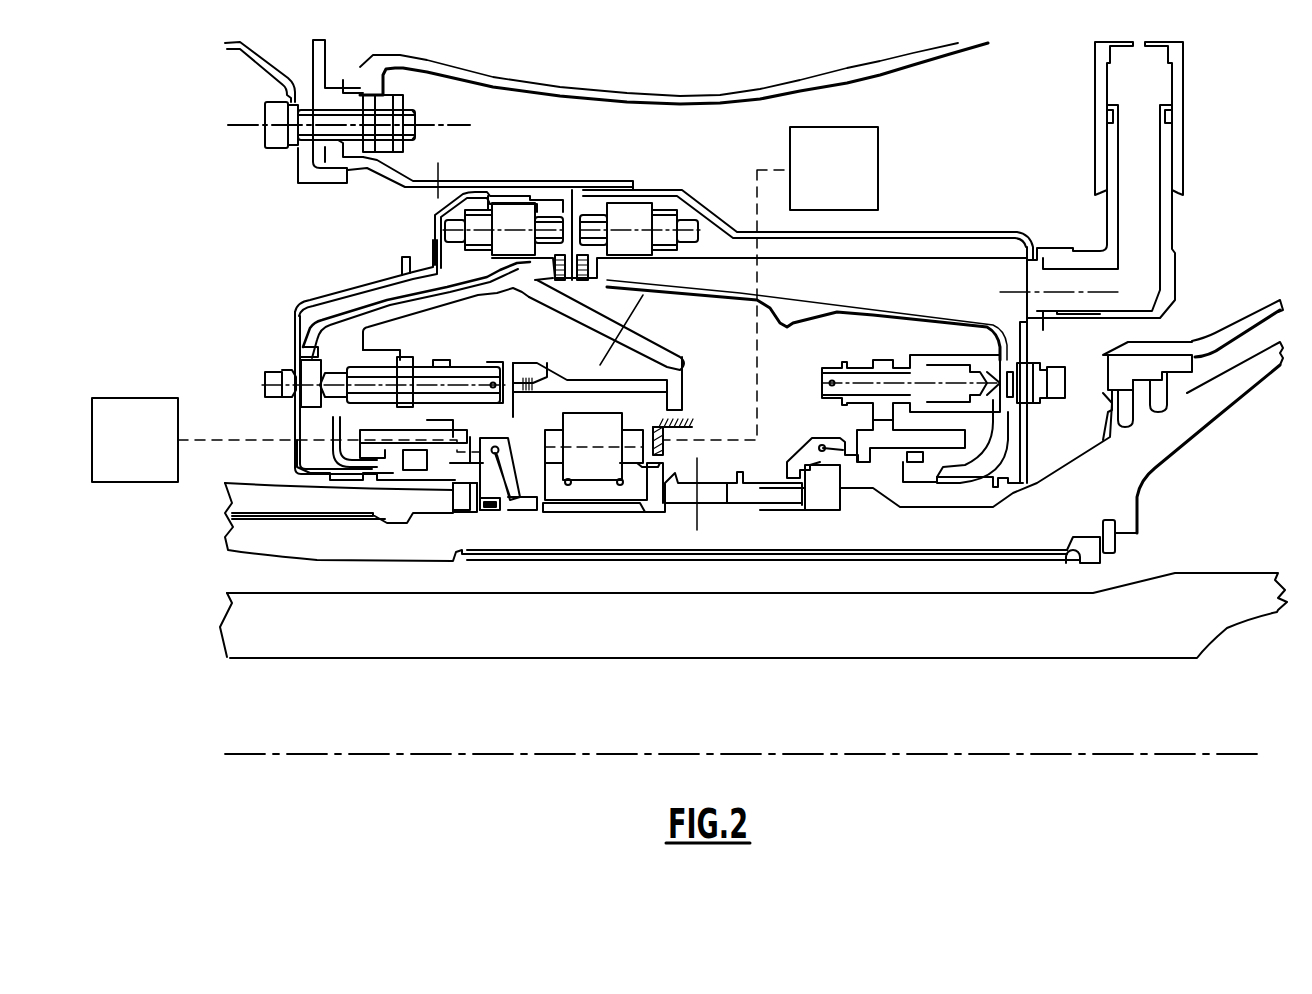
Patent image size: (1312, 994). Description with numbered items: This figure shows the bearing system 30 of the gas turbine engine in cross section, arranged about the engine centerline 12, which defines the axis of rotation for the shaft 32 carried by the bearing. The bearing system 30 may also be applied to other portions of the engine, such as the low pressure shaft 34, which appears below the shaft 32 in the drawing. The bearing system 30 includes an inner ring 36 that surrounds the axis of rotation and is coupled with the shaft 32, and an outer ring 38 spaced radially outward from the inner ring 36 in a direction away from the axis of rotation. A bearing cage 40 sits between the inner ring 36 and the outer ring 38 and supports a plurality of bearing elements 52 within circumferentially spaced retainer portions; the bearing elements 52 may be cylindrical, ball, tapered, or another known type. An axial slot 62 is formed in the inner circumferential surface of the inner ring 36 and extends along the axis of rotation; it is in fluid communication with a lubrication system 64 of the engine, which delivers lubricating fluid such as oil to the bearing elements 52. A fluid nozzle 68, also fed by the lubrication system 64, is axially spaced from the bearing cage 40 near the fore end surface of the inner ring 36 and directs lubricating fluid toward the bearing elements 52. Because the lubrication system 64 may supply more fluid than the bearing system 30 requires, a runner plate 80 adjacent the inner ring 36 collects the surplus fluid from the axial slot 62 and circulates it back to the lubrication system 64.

The engine centerline 12 is at (1157, 757).
The bearing system 30 is at (703, 427).
The shaft 32 is at (1117, 492).
The low pressure shaft 34 is at (1243, 580).
The inner ring 36 is at (618, 500).
The outer ring 38 is at (578, 393).
The bearing cage 40 is at (538, 437).
The bearing elements 52 is at (602, 427).
The axial slot 62 is at (600, 505).
The lubrication system 64 is at (142, 483).
The fluid nozzle 68 is at (663, 447).
The runner plate 80 is at (493, 500).